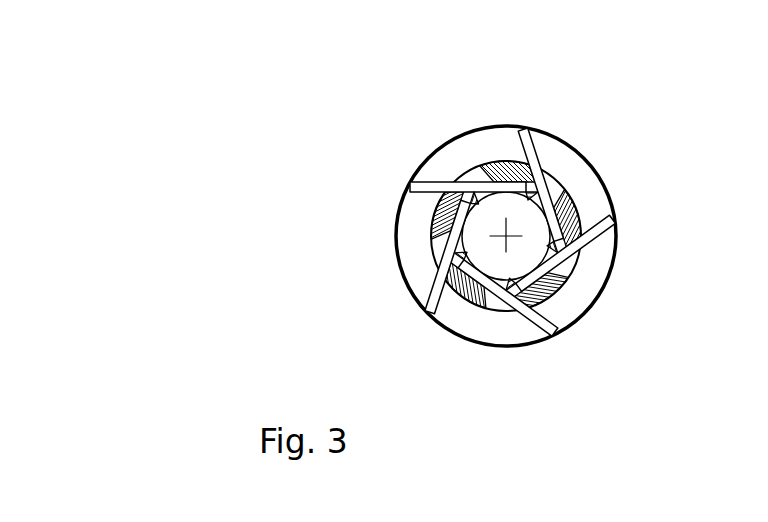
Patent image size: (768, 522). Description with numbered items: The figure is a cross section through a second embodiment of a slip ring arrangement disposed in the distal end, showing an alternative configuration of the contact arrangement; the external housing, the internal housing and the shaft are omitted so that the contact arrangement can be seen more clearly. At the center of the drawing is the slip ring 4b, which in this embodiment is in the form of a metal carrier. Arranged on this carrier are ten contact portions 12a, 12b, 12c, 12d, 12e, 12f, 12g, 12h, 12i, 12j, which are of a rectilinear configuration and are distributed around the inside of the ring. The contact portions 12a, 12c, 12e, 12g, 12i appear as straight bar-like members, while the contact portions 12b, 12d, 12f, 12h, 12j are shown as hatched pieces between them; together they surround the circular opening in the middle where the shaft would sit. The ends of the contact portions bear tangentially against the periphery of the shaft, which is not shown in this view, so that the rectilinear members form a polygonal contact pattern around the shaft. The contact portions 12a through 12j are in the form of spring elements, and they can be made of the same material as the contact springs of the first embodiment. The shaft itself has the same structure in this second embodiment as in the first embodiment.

The slip ring 4b is at (590, 283).
The contact portion 12a is at (614, 216).
The contact portion 12b is at (573, 195).
The contact portion 12c is at (524, 136).
The contact portion 12d is at (498, 162).
The contact portion 12e is at (413, 185).
The contact portion 12f is at (433, 224).
The contact portion 12g is at (423, 303).
The contact portion 12h is at (472, 308).
The contact portion 12i is at (555, 333).
The contact portion 12j is at (564, 290).